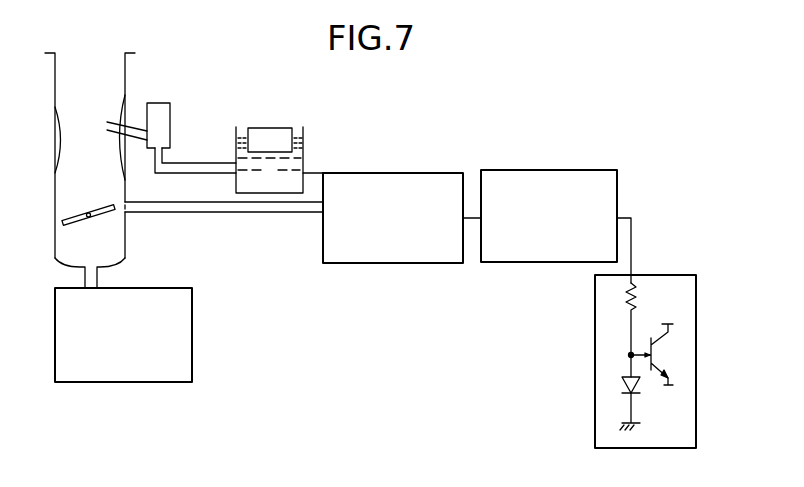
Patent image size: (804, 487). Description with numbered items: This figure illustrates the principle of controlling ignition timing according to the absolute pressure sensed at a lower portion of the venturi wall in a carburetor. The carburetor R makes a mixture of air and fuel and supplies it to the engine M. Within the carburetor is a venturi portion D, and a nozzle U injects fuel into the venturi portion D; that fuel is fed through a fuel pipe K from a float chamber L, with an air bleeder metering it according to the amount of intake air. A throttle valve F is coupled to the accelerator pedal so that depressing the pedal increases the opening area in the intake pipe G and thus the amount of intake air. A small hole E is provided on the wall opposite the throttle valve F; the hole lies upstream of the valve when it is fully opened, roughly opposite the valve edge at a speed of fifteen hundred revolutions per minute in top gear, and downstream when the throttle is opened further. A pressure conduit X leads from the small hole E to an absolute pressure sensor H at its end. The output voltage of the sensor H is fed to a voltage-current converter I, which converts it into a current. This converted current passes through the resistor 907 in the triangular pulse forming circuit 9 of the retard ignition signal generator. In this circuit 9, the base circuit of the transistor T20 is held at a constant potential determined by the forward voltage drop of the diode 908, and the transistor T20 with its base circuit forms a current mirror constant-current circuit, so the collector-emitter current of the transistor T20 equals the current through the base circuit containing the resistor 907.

The venturi portion D is at (57, 110).
The nozzle U is at (133, 128).
The fuel valve J is at (157, 102).
The fuel pipe K is at (198, 163).
The float chamber L is at (306, 158).
The pressure conduit X is at (237, 212).
The small hole E is at (131, 219).
The throttle valve F is at (88, 211).
The intake pipe G is at (62, 252).
The carburetor R is at (55, 192).
The engine M is at (192, 357).
The absolute pressure sensor H is at (423, 173).
The voltage-current converter I is at (580, 170).
The triangular pulse forming circuit 9 is at (655, 273).
The resistor 907 is at (639, 296).
The diode 908 is at (638, 381).
The transistor T20 is at (659, 353).